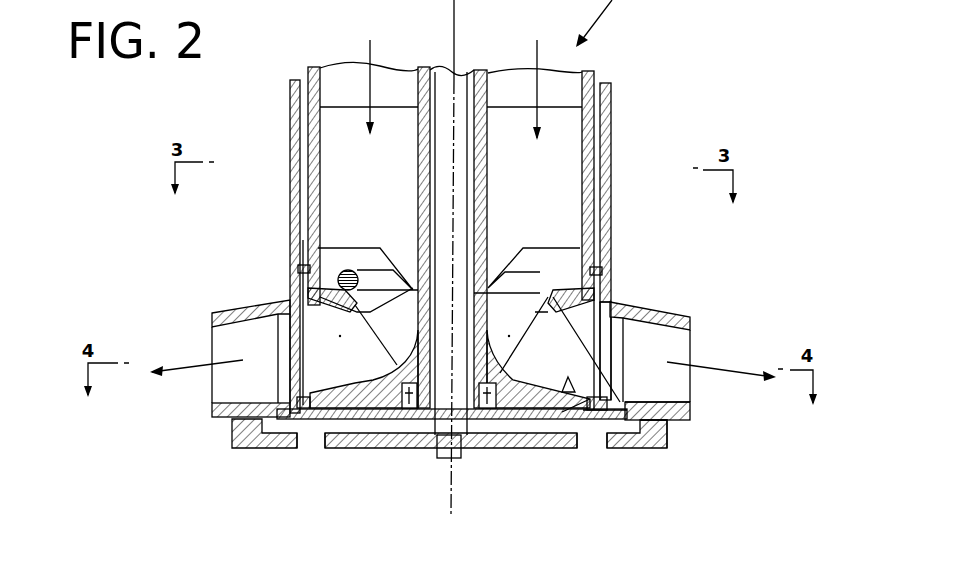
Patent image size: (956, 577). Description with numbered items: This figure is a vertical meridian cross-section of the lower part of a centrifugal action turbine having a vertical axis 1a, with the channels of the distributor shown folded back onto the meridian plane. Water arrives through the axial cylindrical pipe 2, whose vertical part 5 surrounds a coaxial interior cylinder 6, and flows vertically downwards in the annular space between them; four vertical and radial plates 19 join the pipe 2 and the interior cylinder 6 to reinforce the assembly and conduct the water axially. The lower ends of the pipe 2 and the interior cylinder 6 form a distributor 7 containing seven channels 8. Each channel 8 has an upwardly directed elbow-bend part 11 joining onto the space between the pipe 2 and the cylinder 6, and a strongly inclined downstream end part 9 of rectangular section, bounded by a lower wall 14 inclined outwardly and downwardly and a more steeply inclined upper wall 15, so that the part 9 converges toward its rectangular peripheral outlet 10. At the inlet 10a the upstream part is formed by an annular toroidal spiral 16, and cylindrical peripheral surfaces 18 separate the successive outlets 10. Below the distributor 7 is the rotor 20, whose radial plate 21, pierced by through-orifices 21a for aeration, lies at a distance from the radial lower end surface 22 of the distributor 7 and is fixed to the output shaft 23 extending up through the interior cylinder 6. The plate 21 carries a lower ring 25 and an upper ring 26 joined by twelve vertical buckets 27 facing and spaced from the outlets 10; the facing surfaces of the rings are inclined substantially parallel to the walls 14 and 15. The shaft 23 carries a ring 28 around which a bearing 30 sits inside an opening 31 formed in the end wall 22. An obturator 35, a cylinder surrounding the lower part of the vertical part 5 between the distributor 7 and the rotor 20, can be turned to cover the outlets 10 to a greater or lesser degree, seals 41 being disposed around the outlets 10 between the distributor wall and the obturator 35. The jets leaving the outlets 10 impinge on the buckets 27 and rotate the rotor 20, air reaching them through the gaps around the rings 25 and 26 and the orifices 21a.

The vertical axis 1a is at (455, 30).
The axial cylindrical pipe 2 is at (605, 69).
The vertical part 5 is at (313, 183).
The interior cylinder 6 is at (487, 198).
The distributor 7 is at (330, 354).
The channels 8 is at (476, 325).
The downstream end part 9 is at (545, 352).
The outlet 10 is at (273, 410).
The inlet 10a is at (310, 293).
The elbow-bend part 11 is at (390, 320).
The lower wall 14 is at (597, 412).
The upper wall 15 is at (652, 449).
The annular toroidal spiral 16 is at (345, 272).
The cylindrical peripheral surfaces 18 is at (598, 326).
The vertical radial plates 19 is at (357, 158).
The rotor 20 is at (228, 437).
The radial plate 21 is at (545, 449).
The through-orifices 21a is at (597, 444).
The radial lower end surface 22 is at (562, 412).
The output shaft 23 is at (458, 165).
The lower ring 25 is at (214, 410).
The upper ring 26 is at (212, 315).
The vertical buckets 27 is at (227, 345).
The ring 28 is at (422, 420).
The bearing 30 is at (412, 409).
The opening 31 is at (488, 410).
The obturator 35 is at (608, 214).
The seals 41 is at (604, 268).